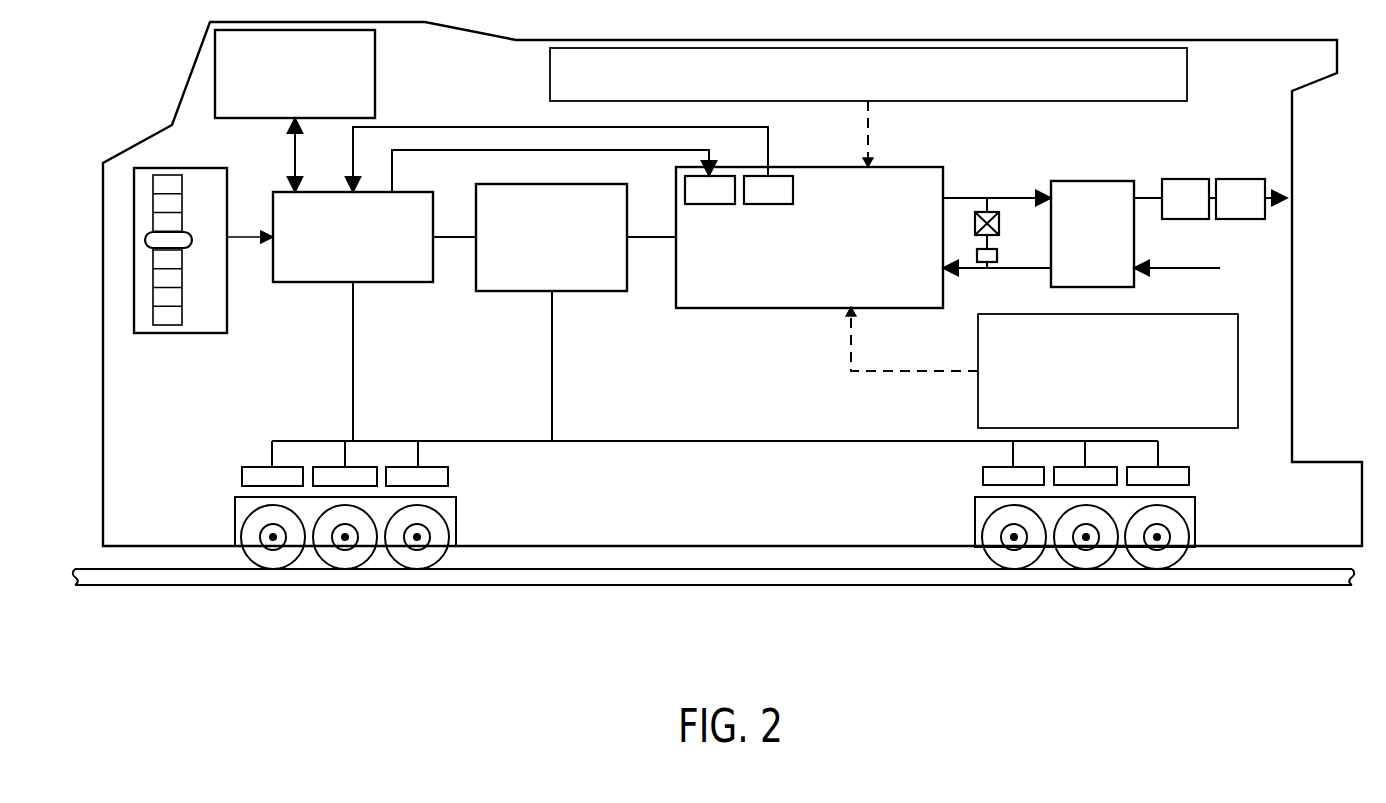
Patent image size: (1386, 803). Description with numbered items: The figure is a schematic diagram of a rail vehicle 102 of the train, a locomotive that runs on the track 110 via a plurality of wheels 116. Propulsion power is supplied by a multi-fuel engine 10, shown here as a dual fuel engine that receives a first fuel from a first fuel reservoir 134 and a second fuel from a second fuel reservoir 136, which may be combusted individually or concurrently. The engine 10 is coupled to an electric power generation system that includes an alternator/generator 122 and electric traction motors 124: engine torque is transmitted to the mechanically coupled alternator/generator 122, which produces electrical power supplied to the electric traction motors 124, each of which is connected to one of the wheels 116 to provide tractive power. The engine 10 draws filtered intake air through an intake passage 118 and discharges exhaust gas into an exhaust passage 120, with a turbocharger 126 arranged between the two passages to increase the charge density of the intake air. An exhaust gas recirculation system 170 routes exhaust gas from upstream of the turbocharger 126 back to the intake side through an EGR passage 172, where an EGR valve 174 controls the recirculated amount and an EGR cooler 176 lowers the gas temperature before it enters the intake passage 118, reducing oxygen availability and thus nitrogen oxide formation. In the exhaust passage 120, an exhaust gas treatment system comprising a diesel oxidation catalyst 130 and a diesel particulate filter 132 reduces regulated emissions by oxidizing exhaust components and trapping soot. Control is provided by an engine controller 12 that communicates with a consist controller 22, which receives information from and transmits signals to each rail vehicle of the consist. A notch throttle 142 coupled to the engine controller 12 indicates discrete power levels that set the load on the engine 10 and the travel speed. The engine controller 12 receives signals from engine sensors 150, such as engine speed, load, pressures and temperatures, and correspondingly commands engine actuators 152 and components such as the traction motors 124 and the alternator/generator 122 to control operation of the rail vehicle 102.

The rail vehicle 102 is at (1012, 40).
The track 110 is at (1265, 590).
The consist controller 22 is at (491, 111).
The engine controller 12 is at (374, 316).
The throttle 142 is at (158, 168).
The alternator/generator 122 is at (576, 312).
The engine 10 is at (809, 237).
The engine actuators 152 is at (563, 177).
The engine sensors 150 is at (768, 190).
The first fuel reservoir 134 is at (868, 107).
The second fuel reservoir 136 is at (1042, 367).
The turbocharger 126 is at (1038, 234).
The exhaust gas recirculation system 170 is at (992, 192).
The EGR passage 172 is at (990, 246).
The EGR valve 174 is at (1000, 222).
The EGR cooler 176 is at (990, 265).
The exhaust passage 120 is at (1148, 198).
The diesel oxidation catalyst 130 is at (1185, 199).
The diesel particulate filter 132 is at (1251, 199).
The intake passage 118 is at (1168, 268).
The electric traction motors 124 is at (448, 466).
The wheels 116 is at (440, 525).